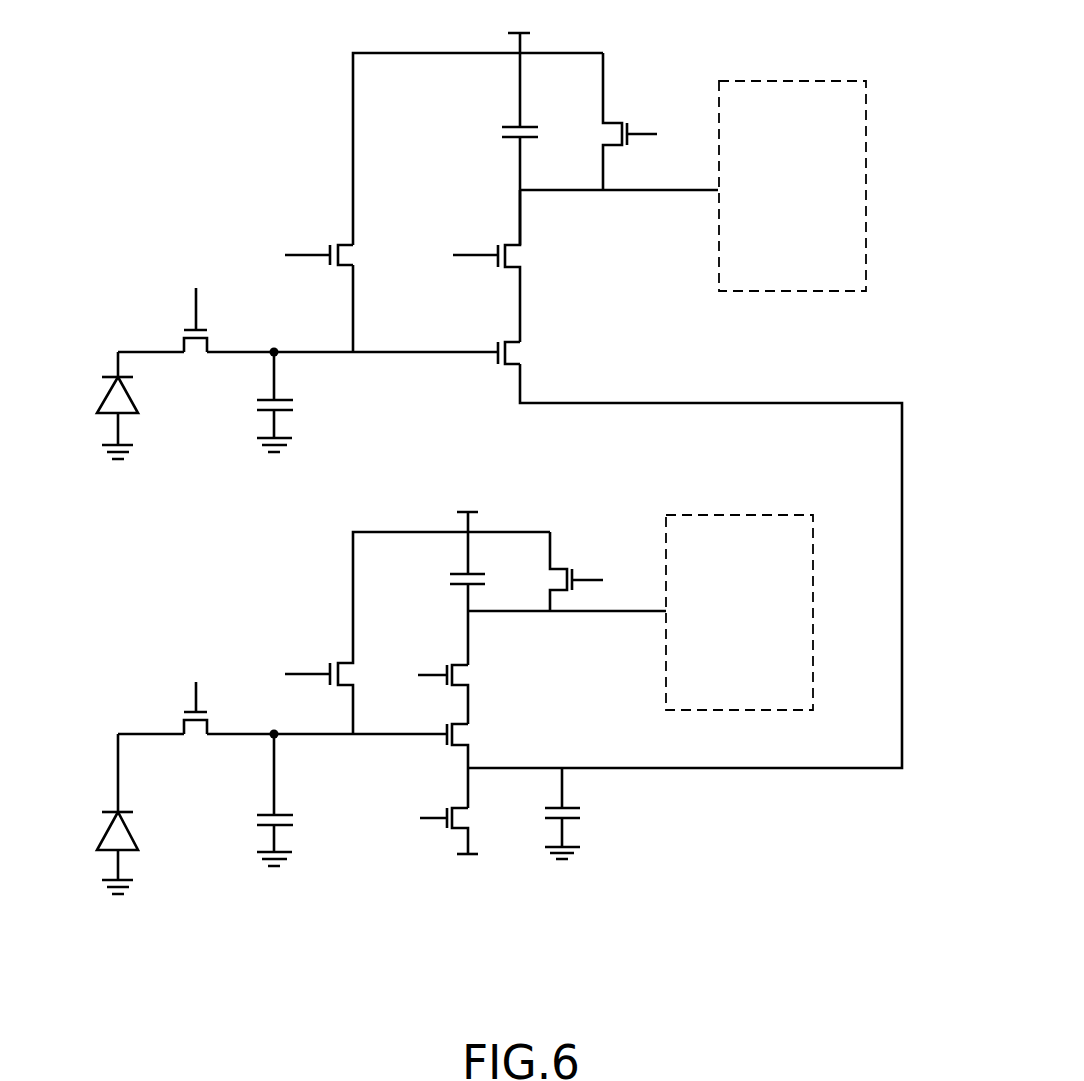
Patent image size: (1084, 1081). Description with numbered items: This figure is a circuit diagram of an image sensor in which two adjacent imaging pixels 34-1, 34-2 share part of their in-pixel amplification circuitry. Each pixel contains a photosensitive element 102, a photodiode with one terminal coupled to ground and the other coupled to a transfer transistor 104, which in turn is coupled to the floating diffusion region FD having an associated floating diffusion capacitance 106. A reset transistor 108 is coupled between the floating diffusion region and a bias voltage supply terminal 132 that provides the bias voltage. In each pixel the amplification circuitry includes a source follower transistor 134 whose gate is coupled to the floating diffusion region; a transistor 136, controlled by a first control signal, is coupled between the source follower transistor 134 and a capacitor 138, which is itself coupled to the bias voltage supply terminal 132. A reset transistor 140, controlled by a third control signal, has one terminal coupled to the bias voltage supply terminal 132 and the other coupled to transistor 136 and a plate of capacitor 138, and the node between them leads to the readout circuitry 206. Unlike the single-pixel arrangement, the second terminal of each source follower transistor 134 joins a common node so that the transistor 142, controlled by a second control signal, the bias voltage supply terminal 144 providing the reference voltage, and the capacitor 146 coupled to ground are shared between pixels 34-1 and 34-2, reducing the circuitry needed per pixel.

The imaging pixel 34-1 is at (273, 135).
The imaging pixel 34-2 is at (235, 598).
The photosensitive element 102 is at (148, 417).
The transfer transistor 104 is at (173, 338).
The floating diffusion capacitance 106 is at (300, 420).
The reset transistor 108 is at (317, 238).
The bias voltage supply terminal 132 is at (531, 34).
The source follower transistor 134 is at (533, 352).
The transistor 136 is at (533, 254).
The capacitor 138 is at (493, 136).
The reset transistor 140 is at (641, 110).
The reset transistor 142 is at (430, 851).
The bias voltage supply terminal 144 is at (473, 857).
The capacitor 146 is at (587, 836).
The readout circuitry 206 is at (818, 81).